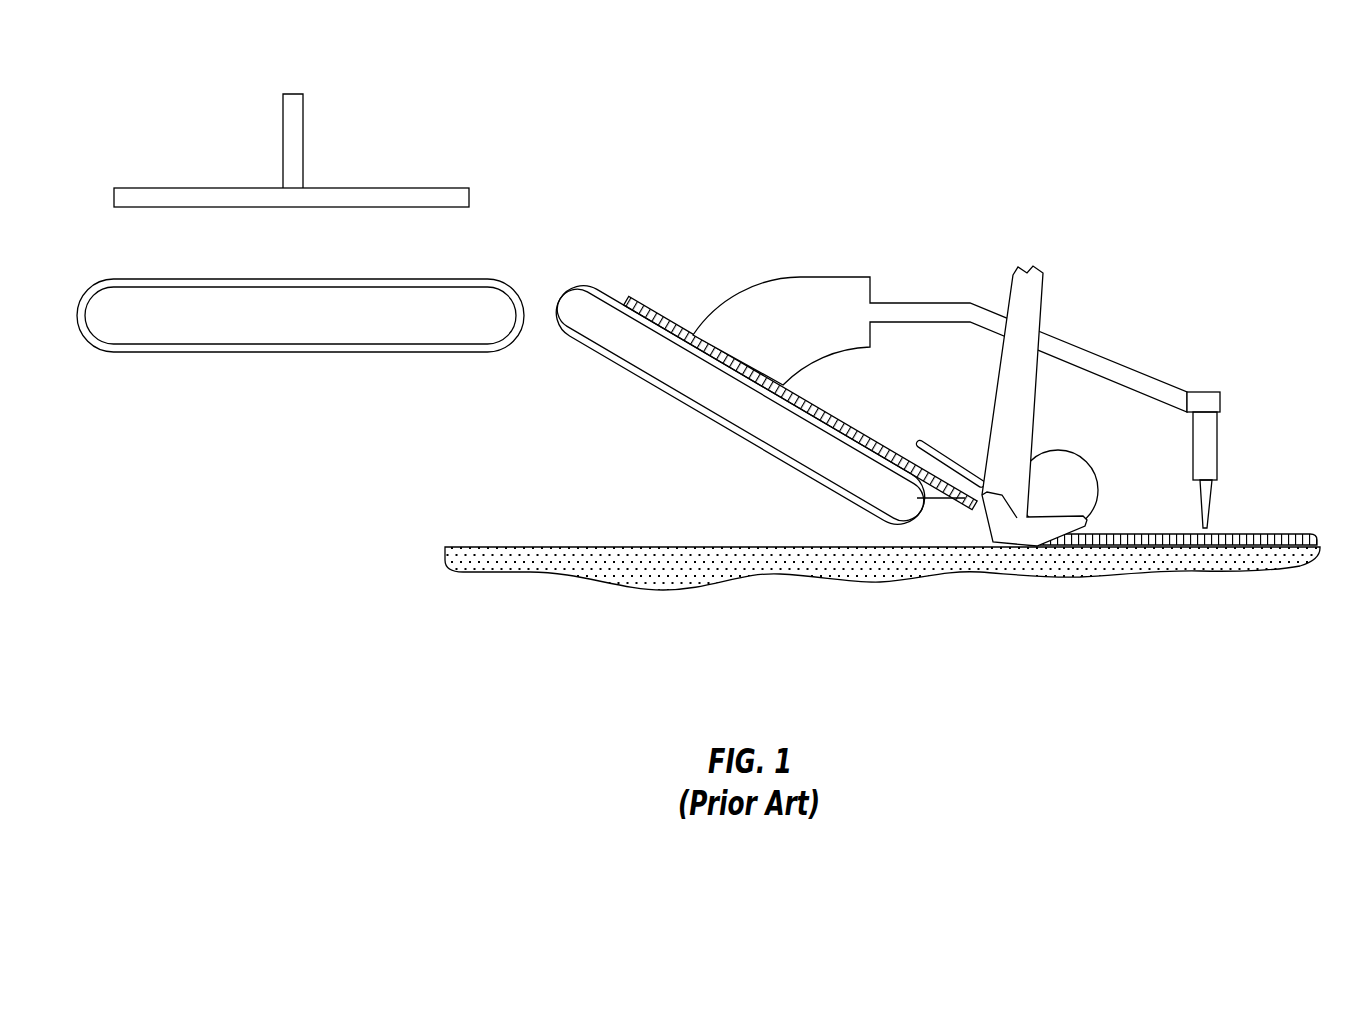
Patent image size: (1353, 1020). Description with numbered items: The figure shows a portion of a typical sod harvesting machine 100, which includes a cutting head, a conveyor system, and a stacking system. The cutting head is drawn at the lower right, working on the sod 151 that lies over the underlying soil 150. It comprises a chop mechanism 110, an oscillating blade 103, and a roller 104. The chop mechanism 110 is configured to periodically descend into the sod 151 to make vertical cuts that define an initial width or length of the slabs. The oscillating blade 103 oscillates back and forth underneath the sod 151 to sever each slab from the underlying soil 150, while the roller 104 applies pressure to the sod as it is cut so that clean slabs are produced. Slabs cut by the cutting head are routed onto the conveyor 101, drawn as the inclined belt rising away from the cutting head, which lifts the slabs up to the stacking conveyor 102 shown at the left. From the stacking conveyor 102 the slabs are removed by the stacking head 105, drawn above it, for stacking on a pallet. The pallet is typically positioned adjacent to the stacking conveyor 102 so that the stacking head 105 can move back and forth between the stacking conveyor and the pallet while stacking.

The sod harvesting machine 100 is at (730, 76).
The conveyor 101 is at (617, 367).
The stacking conveyor 102 is at (150, 351).
The oscillating blade 103 is at (1013, 543).
The roller 104 is at (1031, 442).
The stacking head 105 is at (282, 132).
The chop mechanism 110 is at (1218, 452).
The soil 150 is at (448, 563).
The sod 151 is at (1265, 560).